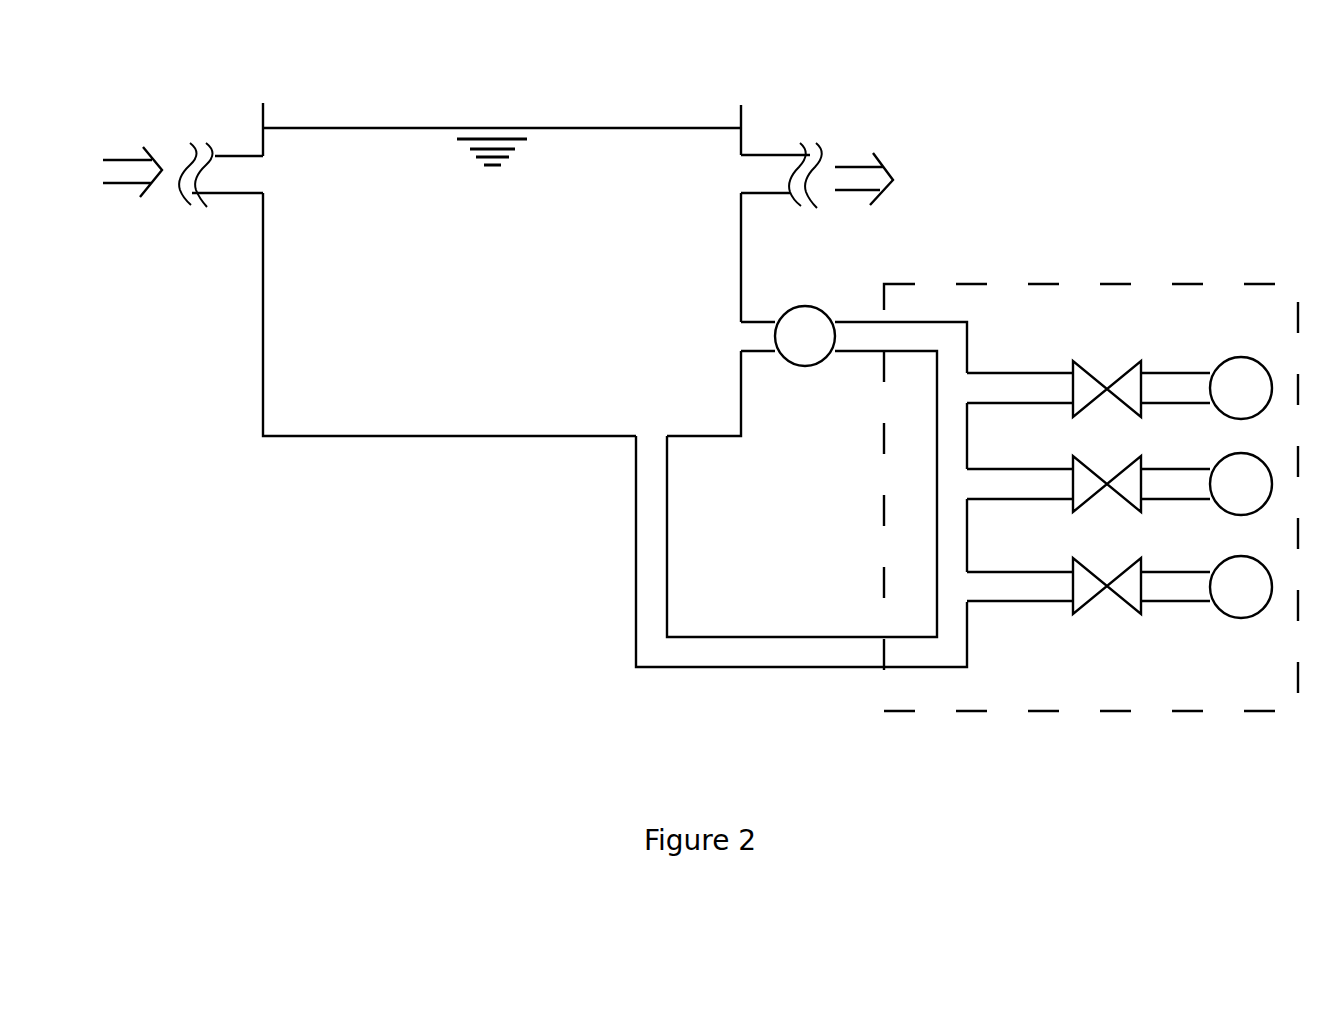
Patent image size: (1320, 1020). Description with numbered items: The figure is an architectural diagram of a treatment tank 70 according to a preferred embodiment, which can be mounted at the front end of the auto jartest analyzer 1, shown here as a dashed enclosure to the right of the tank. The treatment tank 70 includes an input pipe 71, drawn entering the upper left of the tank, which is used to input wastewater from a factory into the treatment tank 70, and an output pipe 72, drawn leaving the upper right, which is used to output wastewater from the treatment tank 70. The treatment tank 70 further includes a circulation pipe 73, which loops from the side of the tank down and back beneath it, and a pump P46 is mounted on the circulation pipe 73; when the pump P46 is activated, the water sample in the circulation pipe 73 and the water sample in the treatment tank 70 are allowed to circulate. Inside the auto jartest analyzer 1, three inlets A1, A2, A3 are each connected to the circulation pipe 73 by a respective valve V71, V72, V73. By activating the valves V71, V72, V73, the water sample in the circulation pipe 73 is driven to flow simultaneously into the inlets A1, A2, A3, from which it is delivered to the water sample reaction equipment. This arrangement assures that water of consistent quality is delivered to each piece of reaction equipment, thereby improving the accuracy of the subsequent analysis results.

The auto jartest analyzer 1 is at (1060, 283).
The treatment tank 70 is at (427, 385).
The input pipe 71 is at (245, 182).
The output pipe 72 is at (766, 182).
The circulation pipe 73 is at (746, 652).
The pump P46 is at (805, 336).
The valve V71 is at (1088, 376).
The valve V72 is at (1088, 472).
The valve V73 is at (1088, 574).
The inlet A1 is at (1241, 388).
The inlet A2 is at (1241, 484).
The inlet A3 is at (1241, 587).